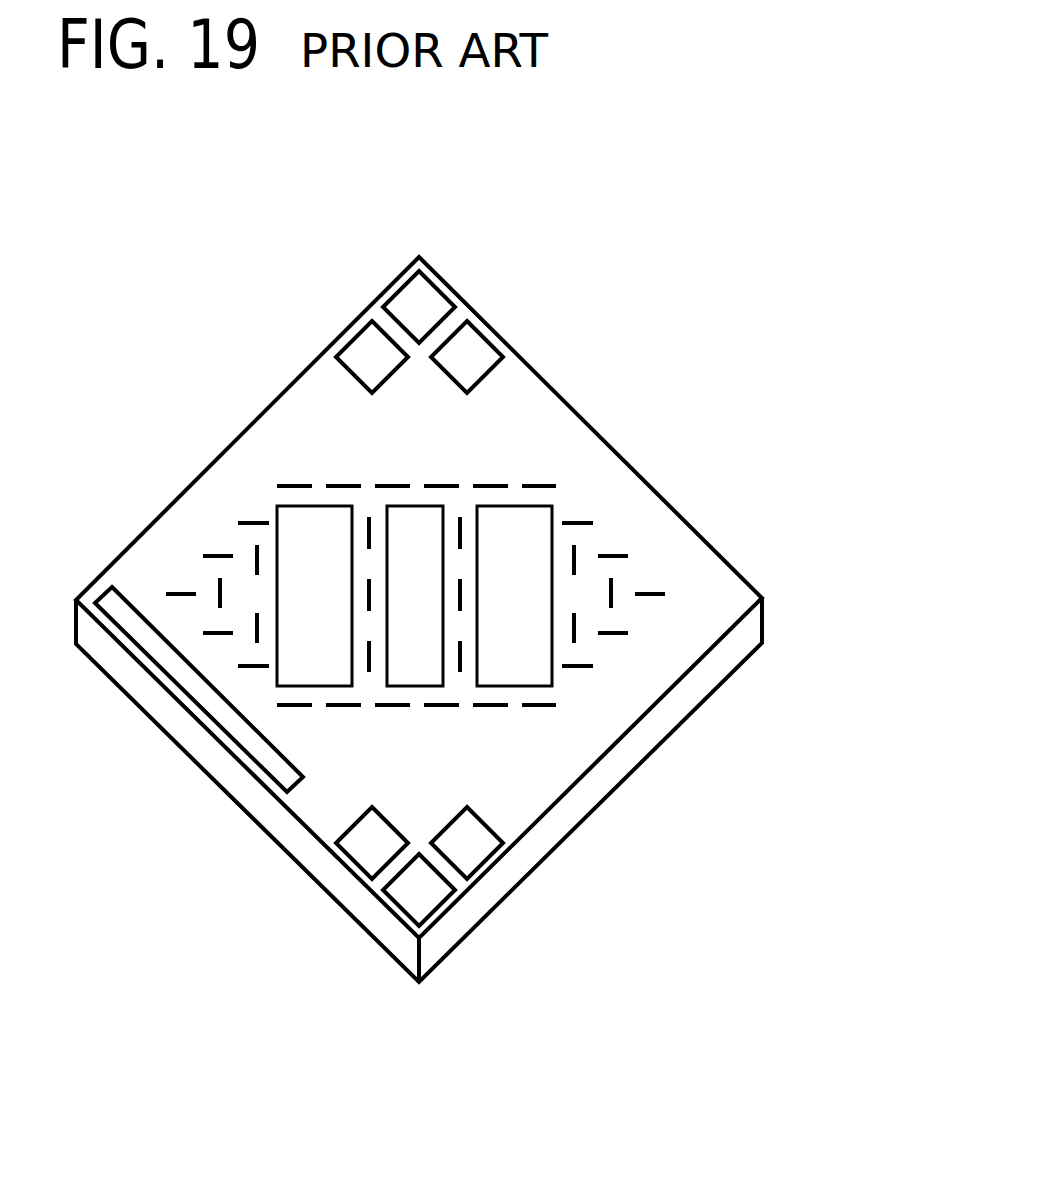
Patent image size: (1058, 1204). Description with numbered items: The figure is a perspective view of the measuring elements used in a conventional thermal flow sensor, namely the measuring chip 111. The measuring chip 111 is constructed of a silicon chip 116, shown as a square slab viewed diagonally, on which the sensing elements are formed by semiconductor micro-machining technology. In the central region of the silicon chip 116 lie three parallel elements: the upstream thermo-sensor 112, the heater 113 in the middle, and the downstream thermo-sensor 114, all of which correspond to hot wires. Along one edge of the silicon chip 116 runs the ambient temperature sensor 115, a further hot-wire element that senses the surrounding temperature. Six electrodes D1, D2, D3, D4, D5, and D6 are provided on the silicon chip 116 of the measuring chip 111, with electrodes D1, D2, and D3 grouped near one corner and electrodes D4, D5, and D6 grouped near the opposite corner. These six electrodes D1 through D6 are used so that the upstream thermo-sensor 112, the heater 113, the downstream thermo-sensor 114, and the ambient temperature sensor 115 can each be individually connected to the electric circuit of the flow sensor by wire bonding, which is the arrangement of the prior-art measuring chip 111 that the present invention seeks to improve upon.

The measuring chip 111 is at (713, 213).
The upstream thermo-sensor 112 is at (313, 533).
The heater 113 is at (413, 515).
The downstream thermo-sensor 114 is at (528, 525).
The ambient temperature sensor 115 is at (217, 705).
The silicon chip 116 is at (730, 595).
The electrode D1 is at (360, 353).
The electrode D2 is at (410, 292).
The electrode D3 is at (467, 356).
The electrode D4 is at (363, 852).
The electrode D5 is at (417, 892).
The electrode D6 is at (472, 852).